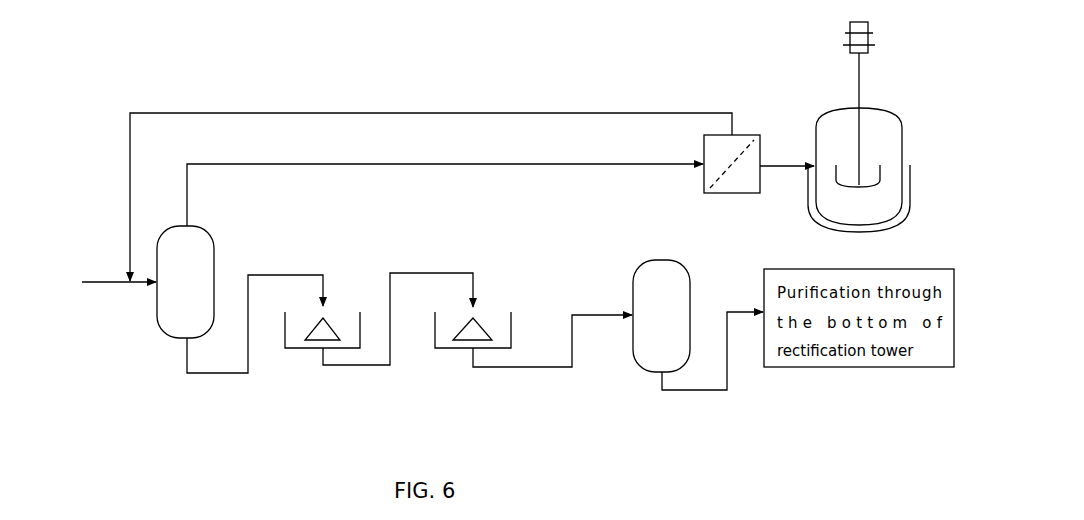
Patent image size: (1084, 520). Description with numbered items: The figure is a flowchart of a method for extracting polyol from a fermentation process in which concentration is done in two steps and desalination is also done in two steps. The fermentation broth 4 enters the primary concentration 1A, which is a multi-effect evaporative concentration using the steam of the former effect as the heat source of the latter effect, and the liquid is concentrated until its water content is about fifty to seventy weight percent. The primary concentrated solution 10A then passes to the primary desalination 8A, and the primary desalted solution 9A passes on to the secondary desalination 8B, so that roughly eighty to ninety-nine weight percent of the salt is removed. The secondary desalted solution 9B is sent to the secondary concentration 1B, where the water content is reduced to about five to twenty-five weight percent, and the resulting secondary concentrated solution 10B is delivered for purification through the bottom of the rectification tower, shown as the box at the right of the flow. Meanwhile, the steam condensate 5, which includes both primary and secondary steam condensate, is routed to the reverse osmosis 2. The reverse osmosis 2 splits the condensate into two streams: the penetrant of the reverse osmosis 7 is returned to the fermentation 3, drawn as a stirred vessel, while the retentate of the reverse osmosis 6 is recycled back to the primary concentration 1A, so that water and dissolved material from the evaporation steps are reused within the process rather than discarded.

The primary concentration 1A is at (157, 323).
The secondary concentration 1B is at (633, 358).
The reverse osmosis 2 is at (712, 195).
The fermentation 3 is at (897, 224).
The fermentation broth 4 is at (101, 281).
The steam condensate 5 is at (445, 183).
The retentate of the reverse osmosis 6 is at (431, 178).
The penetrant of the reverse osmosis 7 is at (787, 154).
The primary desalination 8A is at (285, 330).
The secondary desalination 8B is at (435, 330).
The primary desalted solution 9A is at (398, 332).
The secondary desalted solution 9B is at (552, 355).
The primary concentrated solution 10A is at (255, 340).
The secondary concentrated solution 10B is at (712, 368).